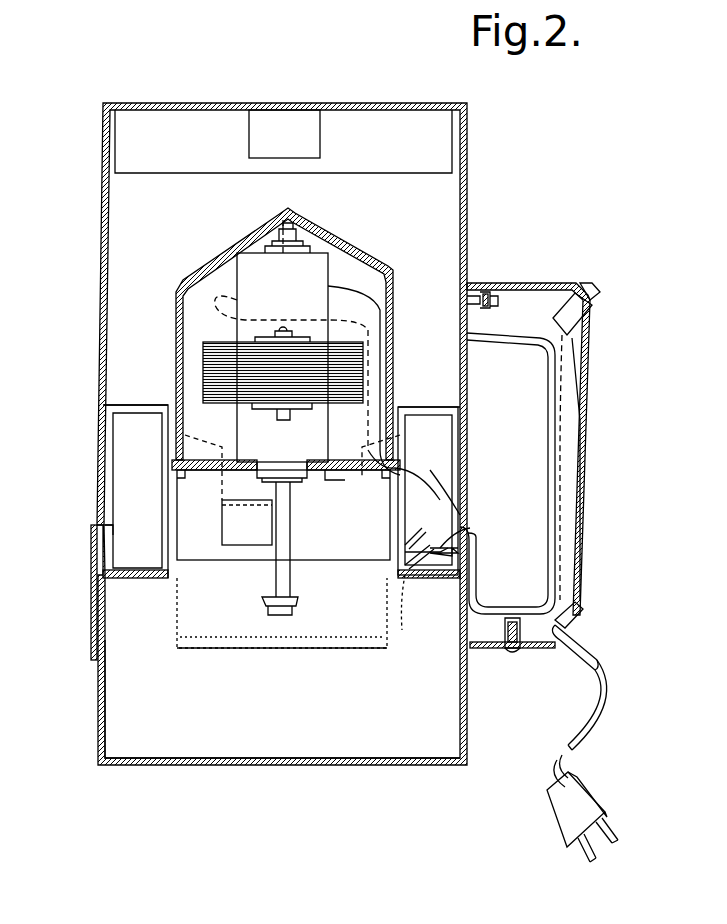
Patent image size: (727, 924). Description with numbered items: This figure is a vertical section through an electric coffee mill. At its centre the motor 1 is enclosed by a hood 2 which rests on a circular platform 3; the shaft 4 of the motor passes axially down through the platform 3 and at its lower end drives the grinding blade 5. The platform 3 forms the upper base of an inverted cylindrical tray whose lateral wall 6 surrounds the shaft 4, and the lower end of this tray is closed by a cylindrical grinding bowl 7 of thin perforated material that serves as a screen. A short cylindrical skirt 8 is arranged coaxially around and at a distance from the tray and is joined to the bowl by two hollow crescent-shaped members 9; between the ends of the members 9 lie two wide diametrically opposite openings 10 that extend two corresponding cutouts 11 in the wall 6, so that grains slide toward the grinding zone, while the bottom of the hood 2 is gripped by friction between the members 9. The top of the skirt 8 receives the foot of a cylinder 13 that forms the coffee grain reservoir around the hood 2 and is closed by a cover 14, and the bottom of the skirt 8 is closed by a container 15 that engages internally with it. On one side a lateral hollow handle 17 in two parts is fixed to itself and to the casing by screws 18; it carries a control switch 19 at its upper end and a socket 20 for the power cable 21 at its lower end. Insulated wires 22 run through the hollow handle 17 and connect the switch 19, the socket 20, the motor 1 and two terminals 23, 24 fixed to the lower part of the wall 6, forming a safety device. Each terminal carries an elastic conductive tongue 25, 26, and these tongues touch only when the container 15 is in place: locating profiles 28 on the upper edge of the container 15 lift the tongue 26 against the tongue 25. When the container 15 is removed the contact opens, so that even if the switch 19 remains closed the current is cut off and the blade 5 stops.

The motor 1 is at (340, 276).
The hood 2 is at (228, 242).
The circular platform 3 is at (204, 466).
The shaft 4 is at (274, 578).
The grinding blade 5 is at (300, 600).
The lateral wall 6 is at (163, 497).
The grinding bowl 7 is at (178, 607).
The skirt 8 is at (93, 622).
The crescent-shaped members 9 is at (118, 410).
The openings 10 is at (345, 482).
The cutouts 11 is at (232, 528).
The cylinder 13 is at (101, 272).
The cover 14 is at (215, 103).
The container 15 is at (185, 766).
The lateral hollow handle 17 is at (537, 282).
The screws 18 is at (488, 284).
The control switch 19 is at (588, 292).
The socket 20 is at (588, 649).
The power cable 21 is at (598, 706).
The insulated wires 22 is at (563, 447).
The terminal 23 is at (397, 544).
The terminal 24 is at (402, 595).
The elastic conductive tongue 25 is at (466, 539).
The elastic conductive tongue 26 is at (442, 576).
The locating profiles 28 is at (106, 567).